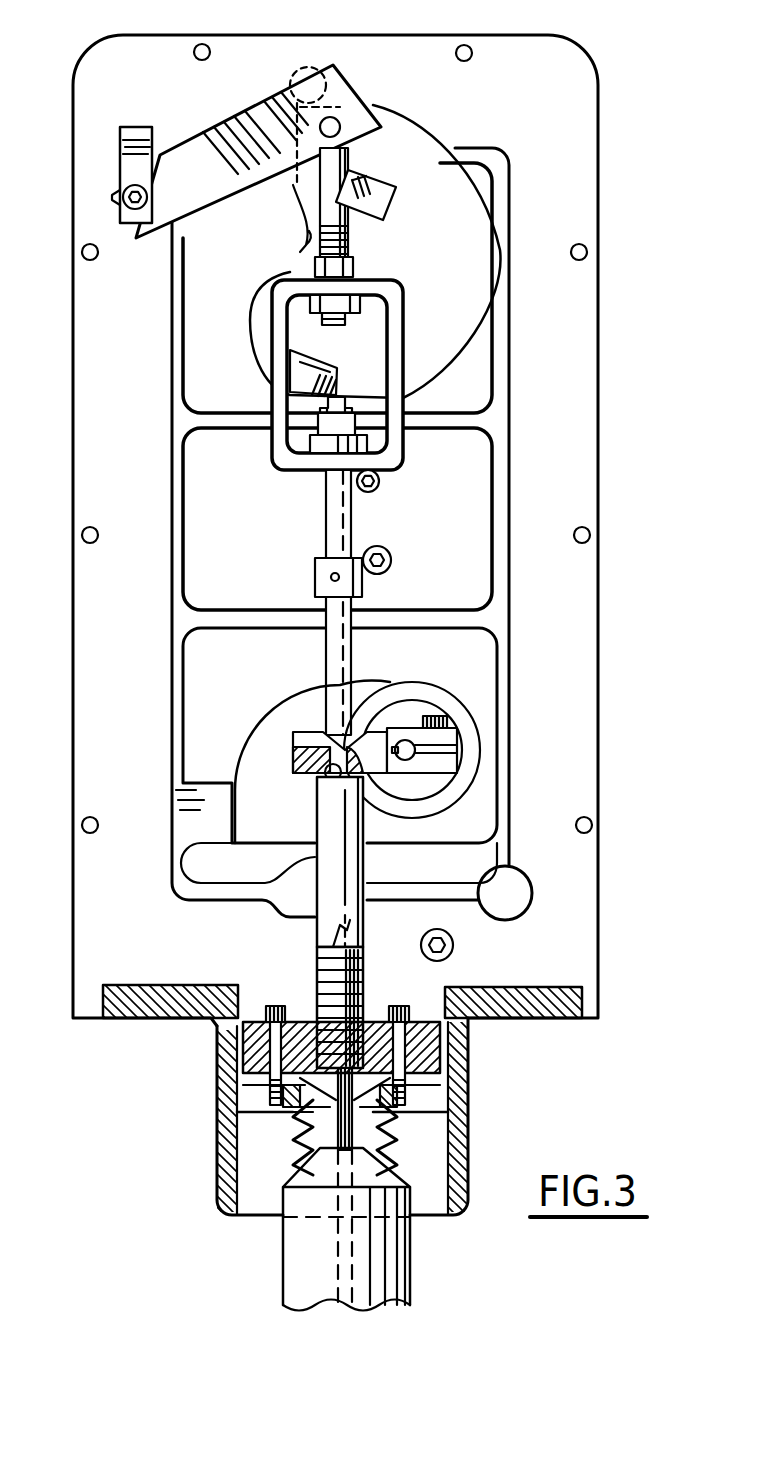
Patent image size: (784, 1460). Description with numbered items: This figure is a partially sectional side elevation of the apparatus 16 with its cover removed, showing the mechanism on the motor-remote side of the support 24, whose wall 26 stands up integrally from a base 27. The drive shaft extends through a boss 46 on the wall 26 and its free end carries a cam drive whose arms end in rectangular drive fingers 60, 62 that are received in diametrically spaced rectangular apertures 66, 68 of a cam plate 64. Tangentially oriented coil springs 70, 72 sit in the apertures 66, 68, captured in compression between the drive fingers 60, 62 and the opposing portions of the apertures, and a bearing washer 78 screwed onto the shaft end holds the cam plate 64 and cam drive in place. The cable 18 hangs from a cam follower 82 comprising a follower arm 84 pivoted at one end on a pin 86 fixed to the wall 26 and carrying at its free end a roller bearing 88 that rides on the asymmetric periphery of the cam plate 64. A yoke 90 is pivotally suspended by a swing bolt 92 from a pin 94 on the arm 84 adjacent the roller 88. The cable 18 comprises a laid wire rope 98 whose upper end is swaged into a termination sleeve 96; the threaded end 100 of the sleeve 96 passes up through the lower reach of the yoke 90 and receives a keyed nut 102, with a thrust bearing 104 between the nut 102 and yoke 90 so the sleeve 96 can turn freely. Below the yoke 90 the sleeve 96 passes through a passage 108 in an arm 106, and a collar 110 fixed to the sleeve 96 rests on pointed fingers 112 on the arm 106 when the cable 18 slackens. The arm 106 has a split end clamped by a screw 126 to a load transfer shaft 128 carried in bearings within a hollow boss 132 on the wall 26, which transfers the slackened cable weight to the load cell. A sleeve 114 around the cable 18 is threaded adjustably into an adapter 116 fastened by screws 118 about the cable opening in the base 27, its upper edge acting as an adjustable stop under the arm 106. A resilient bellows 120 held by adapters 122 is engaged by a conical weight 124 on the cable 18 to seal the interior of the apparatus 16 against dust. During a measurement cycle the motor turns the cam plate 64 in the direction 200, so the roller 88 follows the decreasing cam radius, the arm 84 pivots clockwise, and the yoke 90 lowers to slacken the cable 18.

The apparatus 16 is at (605, 34).
The cable 18 is at (325, 509).
The support 24 is at (470, 1082).
The wall 26 is at (590, 153).
The base 27 is at (160, 1008).
The boss 46 is at (303, 250).
The drive finger 60 is at (392, 190).
The drive finger 62 is at (337, 345).
The cam plate 64 is at (467, 185).
The rectangular aperture 66 is at (390, 182).
The rectangular aperture 68 is at (338, 368).
The coil spring 70 is at (370, 196).
The coil spring 72 is at (336, 378).
The bearing washer 78 is at (312, 275).
The cam follower 82 is at (285, 121).
The follower arm 84 is at (210, 127).
The pin 86 is at (122, 197).
The roller bearing 88 is at (307, 67).
The yoke 90 is at (272, 392).
The swing bolt 92 is at (348, 236).
The pin 94 is at (345, 122).
The termination sleeve 96 is at (352, 542).
The laid wire rope 98 is at (353, 1135).
The threaded end 100 is at (387, 403).
The nut 102 is at (352, 423).
The thrust bearing 104 is at (365, 450).
The arm 106 is at (292, 775).
The passage 108 is at (333, 780).
The collar 110 is at (317, 575).
The pointed fingers 112 is at (340, 730).
The sleeve 114 is at (352, 970).
The adapter 116 is at (432, 1018).
The screws 118 is at (275, 1007).
The resilient bellows 120 is at (293, 1142).
The adapters 122 is at (273, 1107).
The conical weight 124 is at (290, 1252).
The screw 126 is at (481, 718).
The load transfer shaft 128 is at (414, 747).
The hollow boss 132 is at (418, 687).
The direction of rotation 200 is at (463, 315).